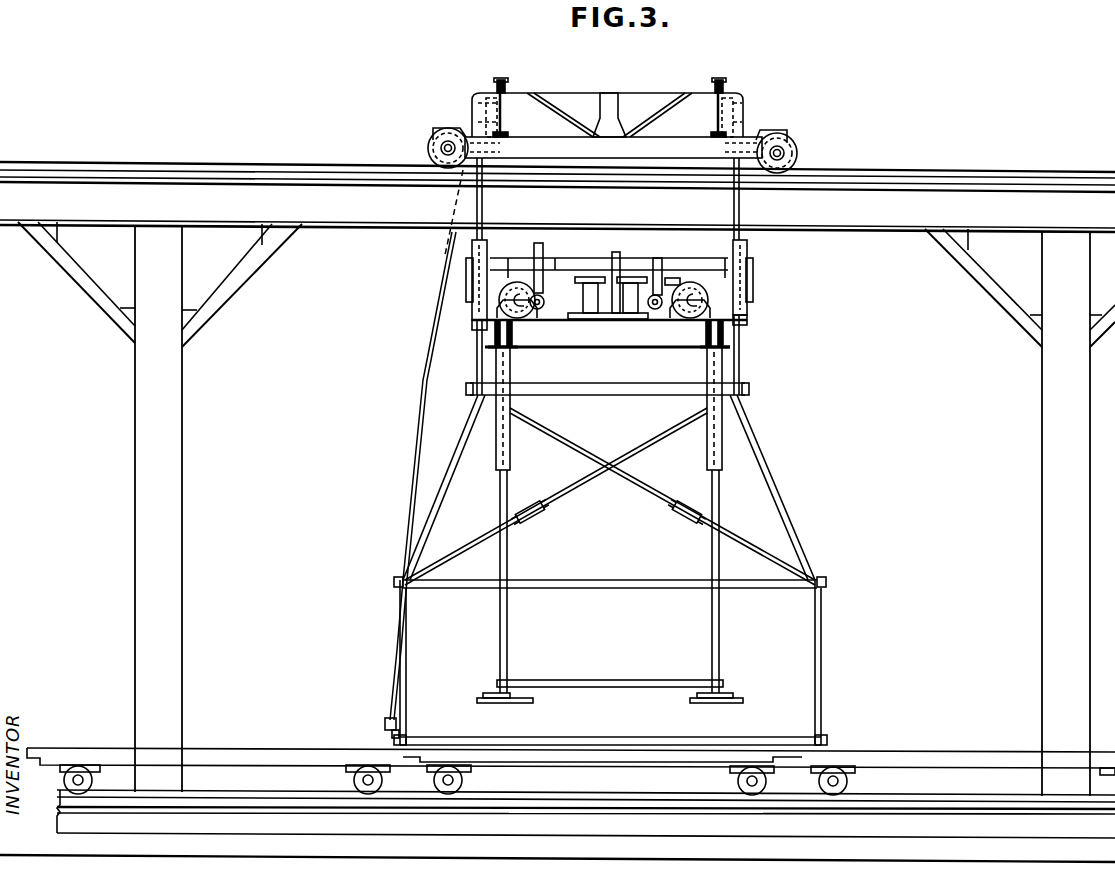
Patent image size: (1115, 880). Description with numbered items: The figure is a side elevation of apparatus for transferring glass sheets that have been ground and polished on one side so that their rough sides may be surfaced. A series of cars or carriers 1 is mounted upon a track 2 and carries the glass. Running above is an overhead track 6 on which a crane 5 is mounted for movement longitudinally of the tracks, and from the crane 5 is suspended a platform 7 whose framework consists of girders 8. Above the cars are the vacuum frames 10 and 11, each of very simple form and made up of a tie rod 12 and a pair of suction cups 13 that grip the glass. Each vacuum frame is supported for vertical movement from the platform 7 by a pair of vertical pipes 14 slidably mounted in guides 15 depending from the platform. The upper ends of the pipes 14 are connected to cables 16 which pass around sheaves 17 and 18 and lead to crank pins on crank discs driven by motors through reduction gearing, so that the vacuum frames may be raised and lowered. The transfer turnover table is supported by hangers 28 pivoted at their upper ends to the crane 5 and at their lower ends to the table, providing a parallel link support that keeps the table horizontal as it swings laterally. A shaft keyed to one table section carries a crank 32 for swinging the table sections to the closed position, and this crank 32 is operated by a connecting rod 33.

The cars or carriers 1 is at (288, 760).
The track 2 is at (925, 795).
The crane 5 is at (715, 148).
The track 6 is at (880, 213).
The platform 7 is at (513, 333).
The girders 8 is at (630, 343).
The vacuum frame 10 is at (483, 695).
The vacuum frame 11 is at (728, 693).
The tie rod 12 is at (613, 687).
The suction cups 13 is at (480, 700).
The vertical pipes 14 is at (510, 560).
The guides 15 is at (512, 458).
The cables 16 is at (560, 275).
The sheaves 17 is at (455, 282).
The sheaves 18 is at (588, 278).
The hangers 28 is at (745, 210).
The crank 32 is at (393, 732).
The connecting rod 33 is at (417, 382).